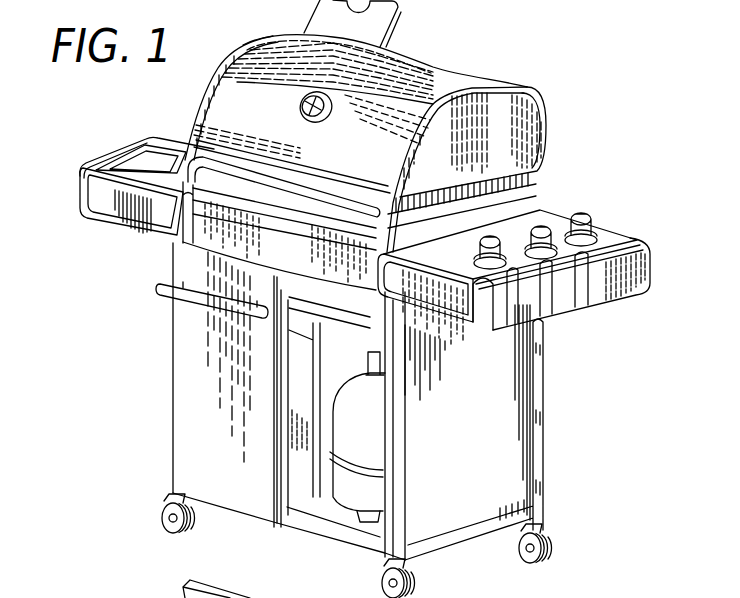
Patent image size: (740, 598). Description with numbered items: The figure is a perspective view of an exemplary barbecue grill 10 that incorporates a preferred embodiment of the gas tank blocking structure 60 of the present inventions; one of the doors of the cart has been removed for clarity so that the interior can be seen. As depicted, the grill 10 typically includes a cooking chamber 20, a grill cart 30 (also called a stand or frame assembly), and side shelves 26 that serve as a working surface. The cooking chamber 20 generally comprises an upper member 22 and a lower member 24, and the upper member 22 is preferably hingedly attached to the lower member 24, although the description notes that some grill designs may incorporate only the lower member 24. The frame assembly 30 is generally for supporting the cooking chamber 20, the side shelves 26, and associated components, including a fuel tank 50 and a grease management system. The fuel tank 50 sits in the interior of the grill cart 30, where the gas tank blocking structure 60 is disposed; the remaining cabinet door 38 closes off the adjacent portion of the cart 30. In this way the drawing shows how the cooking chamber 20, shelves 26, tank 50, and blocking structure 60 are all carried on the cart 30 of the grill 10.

The barbecue grill 10 is at (596, 114).
The cooking chamber 20 is at (504, 67).
The upper member 22 is at (410, 76).
The lower member 24 is at (534, 201).
The side shelves 26 is at (607, 243).
The grill cart 30 is at (563, 473).
The cabinet door 38 is at (205, 432).
The fuel tank 50 is at (363, 493).
The gas tank blocking structure 60 is at (308, 478).